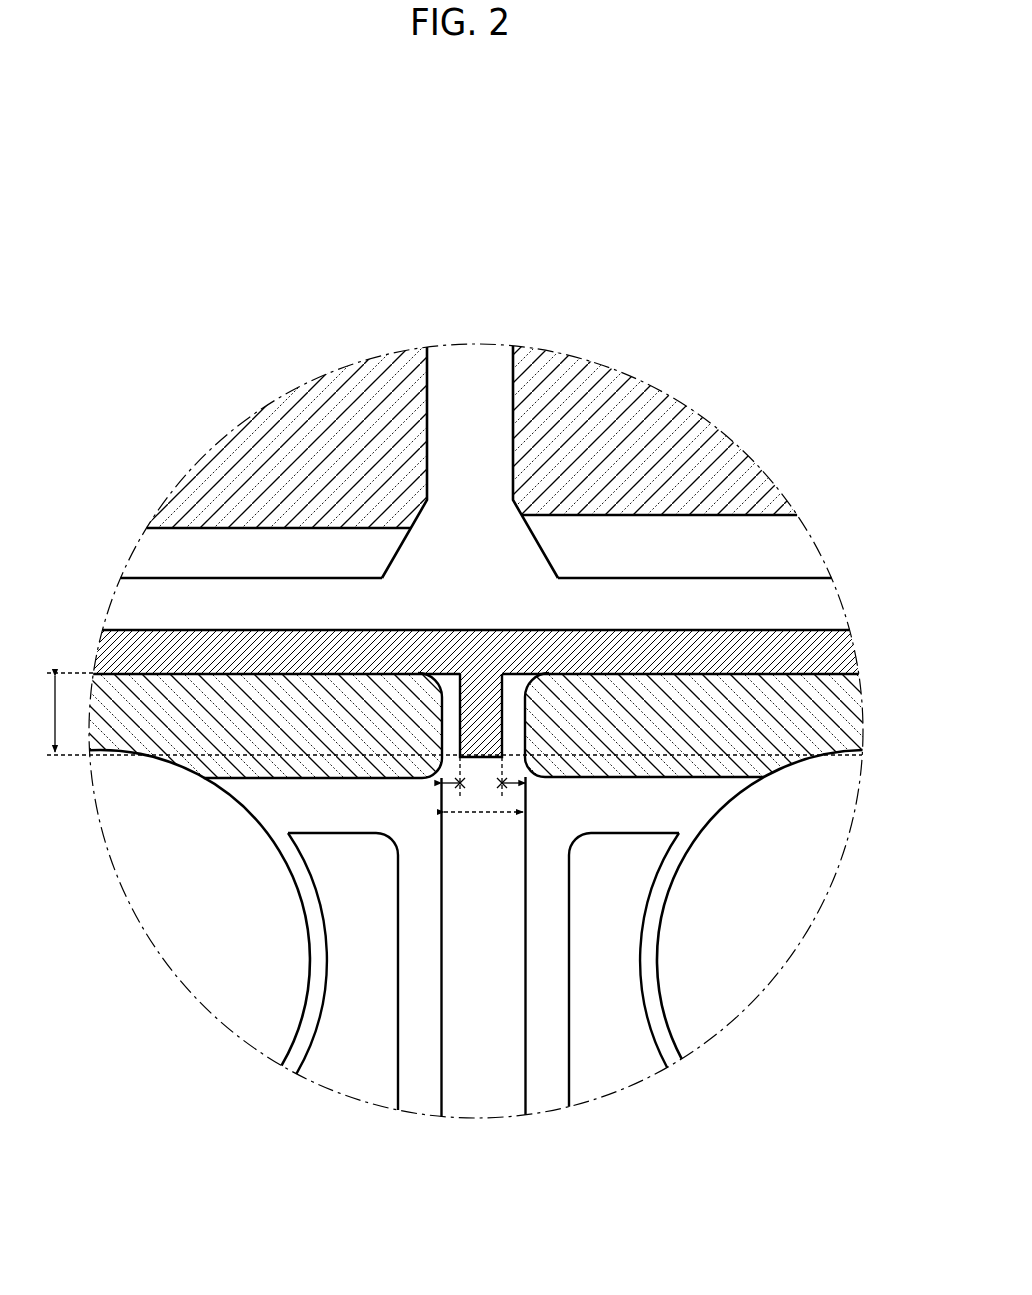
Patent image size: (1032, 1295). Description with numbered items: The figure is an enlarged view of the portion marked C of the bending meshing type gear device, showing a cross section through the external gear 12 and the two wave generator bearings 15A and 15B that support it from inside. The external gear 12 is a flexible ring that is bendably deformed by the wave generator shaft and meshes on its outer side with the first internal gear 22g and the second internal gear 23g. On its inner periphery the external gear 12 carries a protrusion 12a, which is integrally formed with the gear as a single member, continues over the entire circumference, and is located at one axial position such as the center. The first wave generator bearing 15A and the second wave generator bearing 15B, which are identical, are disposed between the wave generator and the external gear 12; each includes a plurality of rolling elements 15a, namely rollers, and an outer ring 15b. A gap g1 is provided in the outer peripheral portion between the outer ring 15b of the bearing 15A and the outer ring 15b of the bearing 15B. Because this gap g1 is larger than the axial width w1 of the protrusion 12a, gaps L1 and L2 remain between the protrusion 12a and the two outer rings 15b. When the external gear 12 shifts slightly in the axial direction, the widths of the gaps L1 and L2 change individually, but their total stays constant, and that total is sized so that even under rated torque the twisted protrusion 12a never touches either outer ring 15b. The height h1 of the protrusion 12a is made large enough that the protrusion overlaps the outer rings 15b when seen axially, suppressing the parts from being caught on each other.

The external gear 12 is at (448, 647).
The protrusion 12a is at (483, 700).
The wave generator bearing 15A is at (843, 940).
The wave generator bearing 15B is at (125, 925).
The rolling elements 15a is at (257, 990).
The outer ring 15b is at (305, 775).
The first internal gear 22g is at (705, 550).
The second internal gear 23g is at (270, 560).
The enlarged portion C is at (497, 345).
The gap g1 is at (480, 820).
The height h1 is at (438, 714).
The width w1 is at (481, 782).
The gap L1 is at (505, 786).
The gap L2 is at (458, 786).